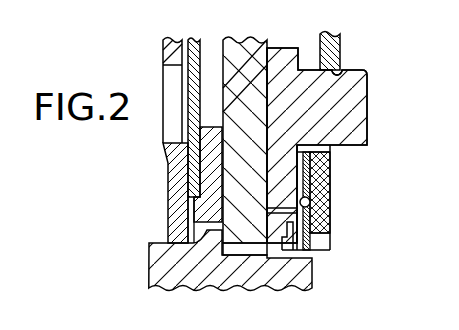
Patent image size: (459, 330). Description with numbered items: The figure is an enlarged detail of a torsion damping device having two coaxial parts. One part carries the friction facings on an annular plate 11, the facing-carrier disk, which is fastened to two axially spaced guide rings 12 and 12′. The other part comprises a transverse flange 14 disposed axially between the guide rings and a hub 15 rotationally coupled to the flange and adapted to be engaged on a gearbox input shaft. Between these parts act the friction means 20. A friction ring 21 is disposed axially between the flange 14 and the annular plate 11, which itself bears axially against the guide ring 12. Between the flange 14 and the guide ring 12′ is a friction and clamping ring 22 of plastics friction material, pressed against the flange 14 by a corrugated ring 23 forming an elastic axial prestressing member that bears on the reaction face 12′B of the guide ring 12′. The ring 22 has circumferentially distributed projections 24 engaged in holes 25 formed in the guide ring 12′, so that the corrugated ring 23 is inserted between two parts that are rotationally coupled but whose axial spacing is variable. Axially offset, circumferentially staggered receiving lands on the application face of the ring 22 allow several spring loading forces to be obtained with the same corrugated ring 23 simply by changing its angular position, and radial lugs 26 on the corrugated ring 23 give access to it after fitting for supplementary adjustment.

The annular plate 11 is at (190, 41).
The guide ring 12 is at (167, 163).
The guide ring 12′ is at (331, 197).
The reaction face 12′B is at (310, 212).
The transverse flange 14 is at (213, 125).
The hub 15 is at (313, 266).
The friction means 20 is at (283, 46).
The friction ring 21 is at (205, 197).
The friction and clamping ring 22 is at (369, 66).
The corrugated ring 23 is at (331, 172).
The projections 24 is at (368, 86).
The holes 25 is at (337, 72).
The radial lugs 26 is at (312, 237).